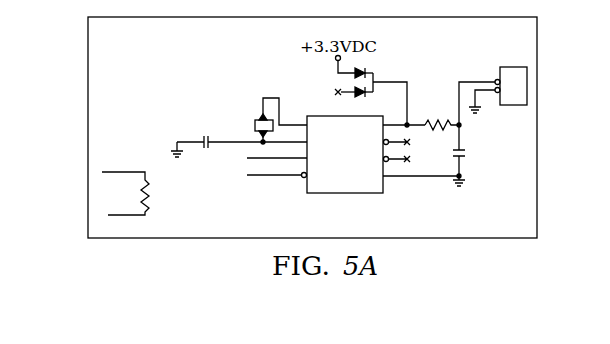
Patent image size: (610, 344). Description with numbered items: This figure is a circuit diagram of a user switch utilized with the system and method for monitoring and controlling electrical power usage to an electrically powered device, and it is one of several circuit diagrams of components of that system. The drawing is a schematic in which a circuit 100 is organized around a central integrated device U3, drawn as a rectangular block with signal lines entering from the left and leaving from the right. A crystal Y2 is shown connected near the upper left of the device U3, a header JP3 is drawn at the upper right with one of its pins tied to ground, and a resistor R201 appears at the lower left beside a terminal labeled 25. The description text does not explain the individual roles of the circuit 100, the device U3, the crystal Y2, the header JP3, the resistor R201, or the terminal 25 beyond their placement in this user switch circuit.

The microcontroller circuit 100 is at (334, 137).
The sensor terminal 25 is at (147, 180).
The microcontroller U3 is at (345, 154).
The crystal Y2 is at (265, 120).
The jumper header JP3 is at (493, 83).
The resistor R201 is at (120, 152).